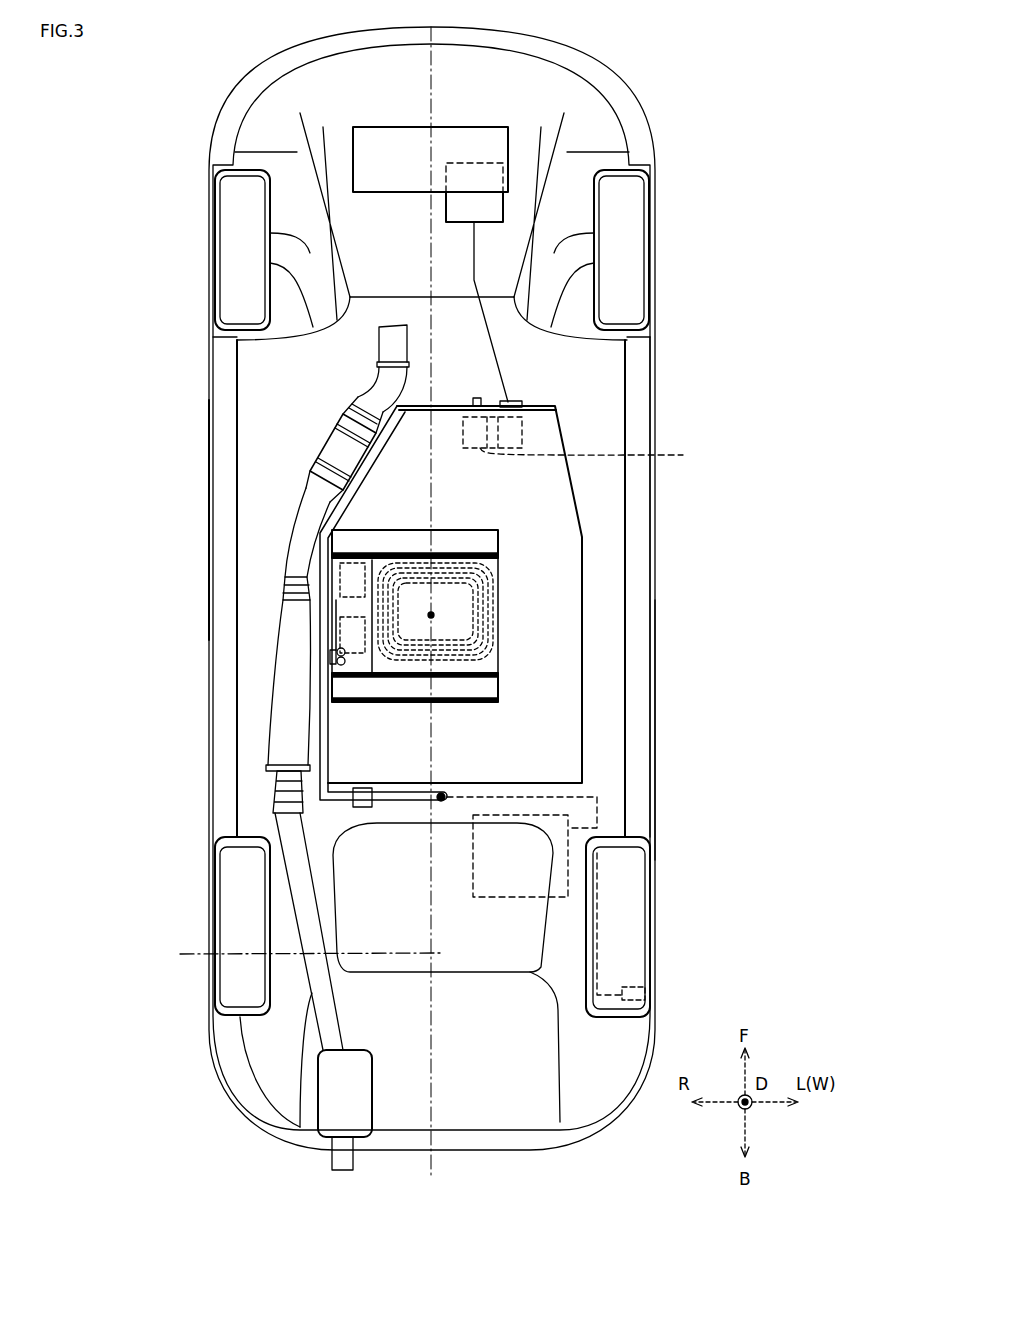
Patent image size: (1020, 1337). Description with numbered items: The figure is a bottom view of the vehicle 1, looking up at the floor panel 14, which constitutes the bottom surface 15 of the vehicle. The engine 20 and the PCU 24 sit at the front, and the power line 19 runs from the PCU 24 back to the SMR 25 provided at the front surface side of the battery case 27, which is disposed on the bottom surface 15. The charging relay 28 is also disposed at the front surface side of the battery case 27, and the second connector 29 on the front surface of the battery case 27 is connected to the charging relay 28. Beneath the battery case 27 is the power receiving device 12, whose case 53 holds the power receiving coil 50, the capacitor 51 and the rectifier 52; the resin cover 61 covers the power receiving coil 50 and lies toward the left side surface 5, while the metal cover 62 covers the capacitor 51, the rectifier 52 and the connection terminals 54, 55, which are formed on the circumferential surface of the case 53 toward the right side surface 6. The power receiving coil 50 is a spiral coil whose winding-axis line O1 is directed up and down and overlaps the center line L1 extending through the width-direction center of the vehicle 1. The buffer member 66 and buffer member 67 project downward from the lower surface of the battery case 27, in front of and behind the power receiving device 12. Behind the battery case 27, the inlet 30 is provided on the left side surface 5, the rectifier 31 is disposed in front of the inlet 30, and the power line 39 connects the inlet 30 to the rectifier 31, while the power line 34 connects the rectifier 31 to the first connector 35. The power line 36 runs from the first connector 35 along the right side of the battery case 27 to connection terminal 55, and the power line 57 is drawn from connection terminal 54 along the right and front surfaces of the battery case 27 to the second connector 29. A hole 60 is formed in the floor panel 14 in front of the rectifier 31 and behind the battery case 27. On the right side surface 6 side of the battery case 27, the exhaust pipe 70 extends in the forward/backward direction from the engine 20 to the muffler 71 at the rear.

The vehicle 1 is at (722, 118).
The left side surface 5 is at (654, 730).
The right side surface 6 is at (210, 521).
The power receiving device 12 is at (497, 660).
The floor panel 14 is at (597, 352).
The bottom surface 15 is at (597, 376).
The power line 19 is at (473, 250).
The engine 20 is at (497, 147).
The PCU 24 is at (497, 207).
The SMR 25 is at (522, 428).
The battery case 27 is at (503, 506).
The charging relay 28 is at (596, 455).
The second connector 29 is at (481, 402).
The inlet 30 is at (645, 995).
The rectifier 31 is at (578, 865).
The power line 34 is at (403, 802).
The first connector 35 is at (352, 805).
The power line 36 is at (323, 770).
The power line 39 is at (598, 898).
The power receiving coil 50 is at (497, 632).
The capacitor 51 is at (330, 612).
The rectifier 52 is at (320, 566).
The case 53 is at (449, 627).
The connection terminal 54 is at (335, 651).
The connection terminal 55 is at (333, 668).
The power line 57 is at (350, 492).
The hole 60 is at (445, 797).
The resin cover 61 is at (497, 608).
The metal cover 62 is at (497, 565).
The buffer member 66 is at (490, 538).
The buffer member 67 is at (490, 690).
The exhaust pipe 70 is at (297, 730).
The muffler 71 is at (327, 1092).
The winding-axis line O1 is at (429, 615).
The center line L1 is at (293, 954).